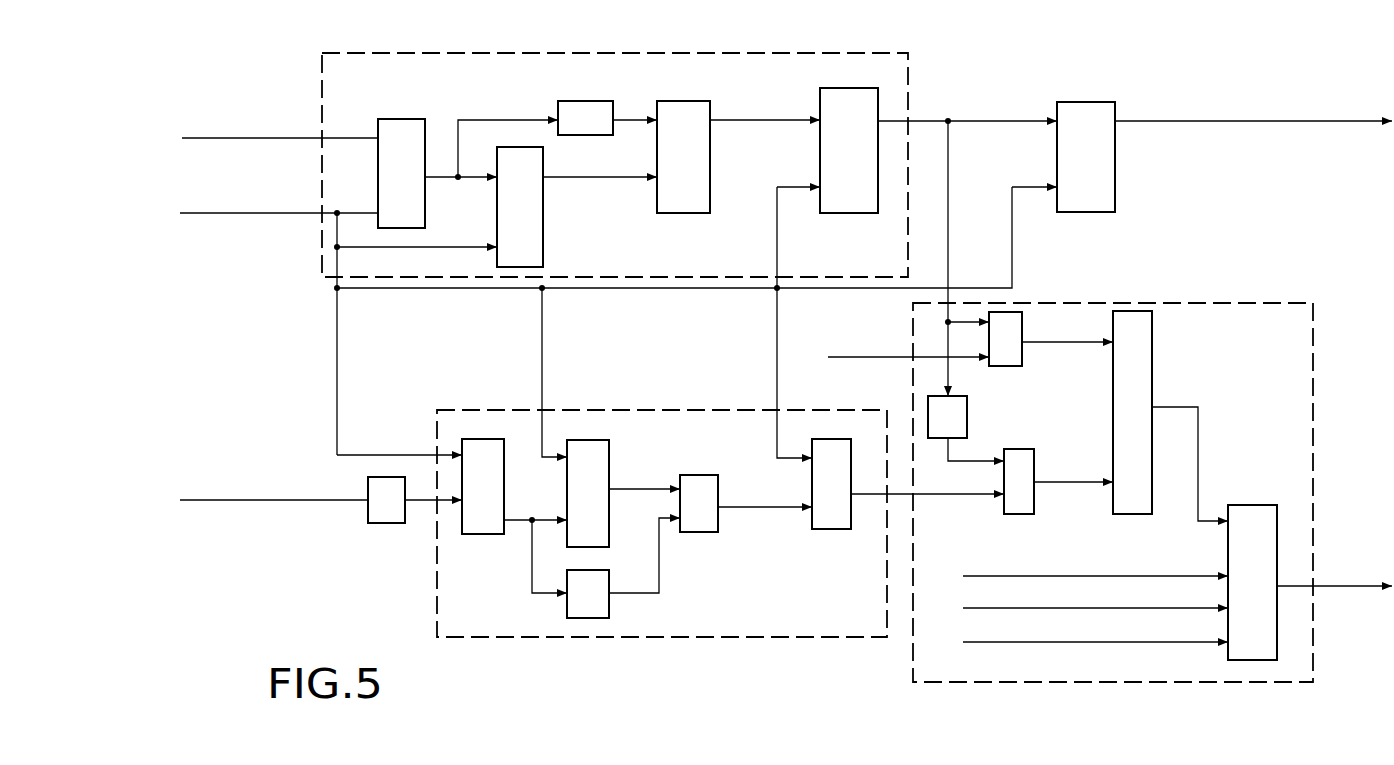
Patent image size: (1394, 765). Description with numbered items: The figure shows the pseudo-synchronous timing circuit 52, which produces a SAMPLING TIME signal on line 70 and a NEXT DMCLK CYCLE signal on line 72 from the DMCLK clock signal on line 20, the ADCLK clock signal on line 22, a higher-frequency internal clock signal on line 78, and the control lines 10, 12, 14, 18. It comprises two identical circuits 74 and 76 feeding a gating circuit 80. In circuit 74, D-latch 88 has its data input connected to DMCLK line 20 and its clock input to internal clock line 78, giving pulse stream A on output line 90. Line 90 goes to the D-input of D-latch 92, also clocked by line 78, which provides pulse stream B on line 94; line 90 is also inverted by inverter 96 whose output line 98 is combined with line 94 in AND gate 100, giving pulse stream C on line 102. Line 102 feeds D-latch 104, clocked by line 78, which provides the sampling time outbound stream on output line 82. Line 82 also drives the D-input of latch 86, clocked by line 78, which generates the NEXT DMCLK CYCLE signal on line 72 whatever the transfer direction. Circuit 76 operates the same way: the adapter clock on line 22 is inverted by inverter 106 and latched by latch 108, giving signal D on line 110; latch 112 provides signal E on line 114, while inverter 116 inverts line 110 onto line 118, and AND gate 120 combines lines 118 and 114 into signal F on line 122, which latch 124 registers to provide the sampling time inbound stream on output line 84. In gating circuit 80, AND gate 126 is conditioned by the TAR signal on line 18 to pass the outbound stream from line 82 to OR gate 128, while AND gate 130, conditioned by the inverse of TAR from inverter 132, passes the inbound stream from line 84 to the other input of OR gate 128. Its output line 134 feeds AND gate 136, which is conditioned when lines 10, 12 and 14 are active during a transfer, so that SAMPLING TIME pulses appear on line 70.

The pseudo-synchronous timing circuit 52 is at (1134, 225).
The circuit 74 is at (418, 52).
The circuit 76 is at (522, 406).
The gating circuit 80 is at (1206, 305).
The D-latch 88 is at (390, 116).
The D-latch 92 is at (543, 256).
The inverter 96 is at (585, 104).
The AND gate 100 is at (697, 93).
The D-latch 104 is at (866, 213).
The latch 86 is at (1085, 102).
The DMCLK clock line 20 is at (292, 145).
The internal clock line 78 is at (291, 215).
The output line 90 is at (491, 168).
The output line 98 is at (622, 109).
The output line 94 is at (635, 178).
The output line 102 is at (769, 120).
The output line 82 is at (988, 121).
The NEXT DMCLK CYCLE line 72 is at (1376, 120).
The ADCLK clock line 22 is at (274, 489).
The inverter 106 is at (380, 523).
The latch 108 is at (471, 428).
The output line 110 is at (510, 523).
The latch 112 is at (588, 482).
The output line 114 is at (617, 492).
The AND gate 120 is at (717, 475).
The inverter 116 is at (609, 609).
The output line 118 is at (660, 552).
The output line 122 is at (755, 511).
The latch 124 is at (818, 428).
The output line 84 is at (946, 494).
The TAR line 18 is at (908, 346).
The AND gate 126 is at (1011, 366).
The inverter 132 is at (967, 418).
The AND gate 130 is at (1040, 471).
The OR gate 128 is at (1154, 370).
The output line 134 is at (1198, 460).
The AND gate 136 is at (1254, 505).
The READY line 14 is at (1083, 576).
The GRANT line 10 is at (1082, 608).
The VALID line 12 is at (1088, 642).
The SAMPLING TIME line 70 is at (1370, 588).